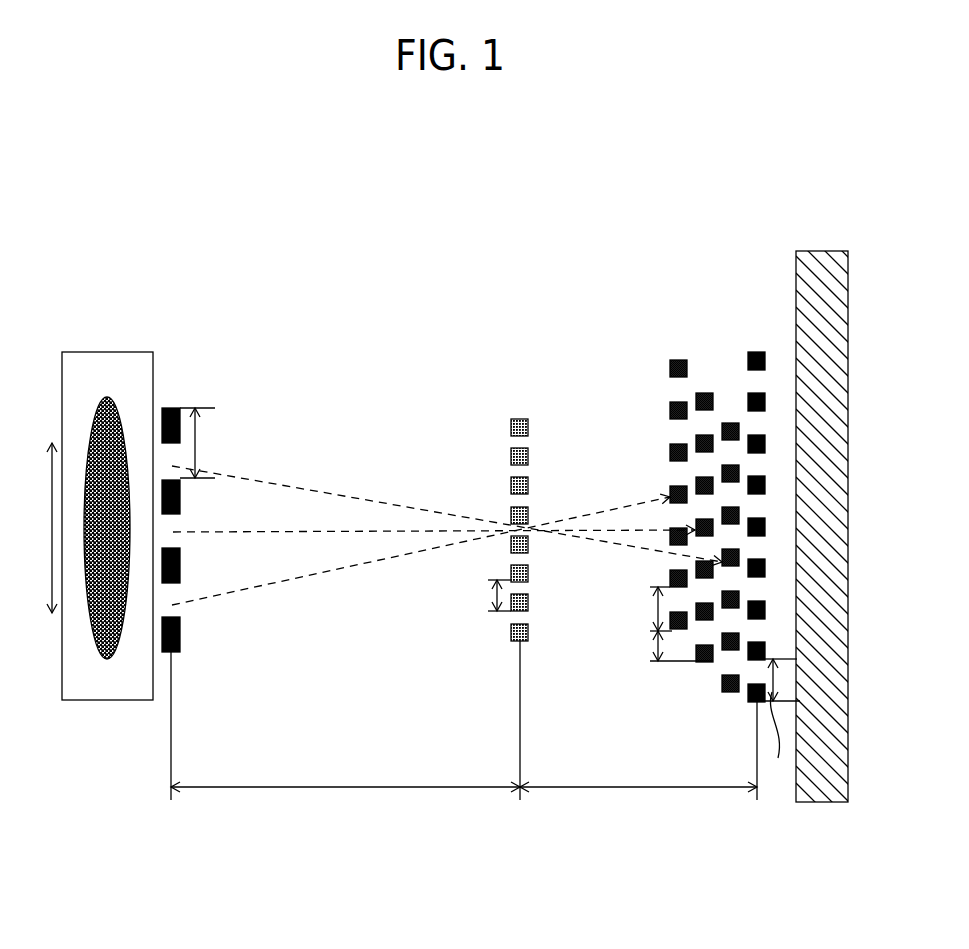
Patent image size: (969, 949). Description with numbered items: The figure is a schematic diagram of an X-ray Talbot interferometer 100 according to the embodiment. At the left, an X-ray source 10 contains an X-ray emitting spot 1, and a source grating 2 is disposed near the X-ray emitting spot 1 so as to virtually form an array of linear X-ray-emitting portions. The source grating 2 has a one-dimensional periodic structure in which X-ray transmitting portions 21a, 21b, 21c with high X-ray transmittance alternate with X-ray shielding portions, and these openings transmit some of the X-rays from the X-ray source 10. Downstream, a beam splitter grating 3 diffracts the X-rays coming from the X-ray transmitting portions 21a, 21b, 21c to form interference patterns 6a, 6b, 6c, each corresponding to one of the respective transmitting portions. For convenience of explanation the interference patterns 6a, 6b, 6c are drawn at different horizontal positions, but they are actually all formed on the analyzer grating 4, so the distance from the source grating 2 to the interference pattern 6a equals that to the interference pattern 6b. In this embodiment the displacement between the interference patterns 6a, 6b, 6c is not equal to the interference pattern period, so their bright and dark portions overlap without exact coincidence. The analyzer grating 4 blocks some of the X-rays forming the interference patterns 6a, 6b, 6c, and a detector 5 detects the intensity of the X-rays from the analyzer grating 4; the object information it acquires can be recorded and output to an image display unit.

The X-ray Talbot interferometer 100 is at (118, 187).
The X-ray source 10 is at (143, 362).
The X-ray emitting spot 1 is at (107, 397).
The source grating 2 is at (172, 408).
The X-ray transmitting portion 21a is at (172, 605).
The X-ray transmitting portion 21b is at (173, 532).
The X-ray transmitting portion 21c is at (175, 466).
The beam splitter grating 3 is at (520, 419).
The interference pattern 6a is at (678, 360).
The interference pattern 6b is at (700, 393).
The interference pattern 6c is at (730, 692).
The analyzer grating 4 is at (757, 352).
The detector 5 is at (830, 260).